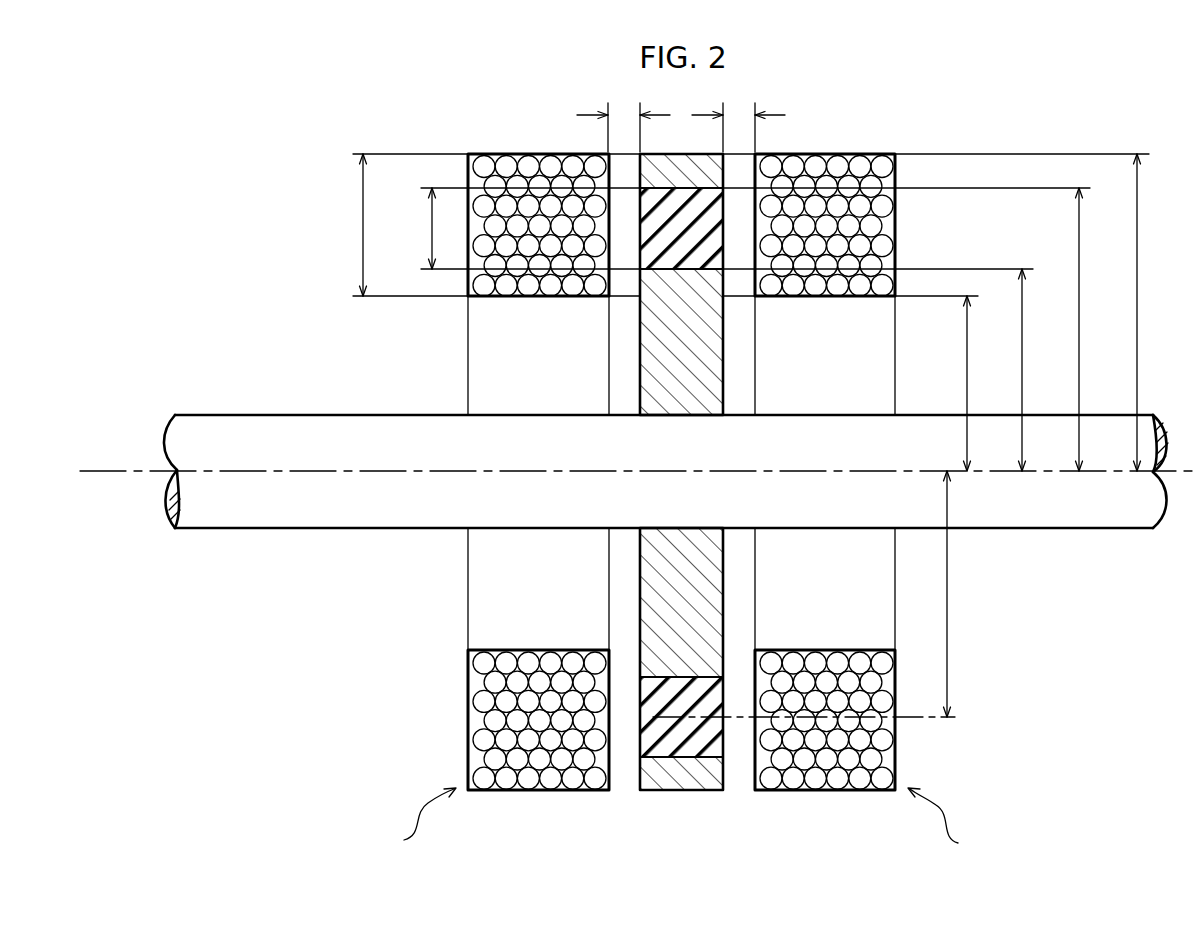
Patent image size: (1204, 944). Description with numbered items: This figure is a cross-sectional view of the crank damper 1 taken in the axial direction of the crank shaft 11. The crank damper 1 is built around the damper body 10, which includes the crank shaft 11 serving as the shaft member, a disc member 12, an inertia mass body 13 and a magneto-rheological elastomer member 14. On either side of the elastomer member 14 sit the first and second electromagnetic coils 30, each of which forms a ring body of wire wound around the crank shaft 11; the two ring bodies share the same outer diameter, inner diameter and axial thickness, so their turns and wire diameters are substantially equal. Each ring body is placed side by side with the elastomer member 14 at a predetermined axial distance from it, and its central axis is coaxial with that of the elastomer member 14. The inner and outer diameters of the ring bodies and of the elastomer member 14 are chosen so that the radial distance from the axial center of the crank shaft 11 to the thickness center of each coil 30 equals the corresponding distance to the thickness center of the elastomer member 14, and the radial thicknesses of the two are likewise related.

The crank damper 1 is at (987, 118).
The damper body 10 is at (397, 578).
The crank shaft 11 is at (407, 530).
The disc member 12 is at (640, 626).
The inertia mass body 13 is at (640, 777).
The magneto-rheological elastomer member 14 is at (640, 690).
The electromagnetic coil 30 is at (530, 791).